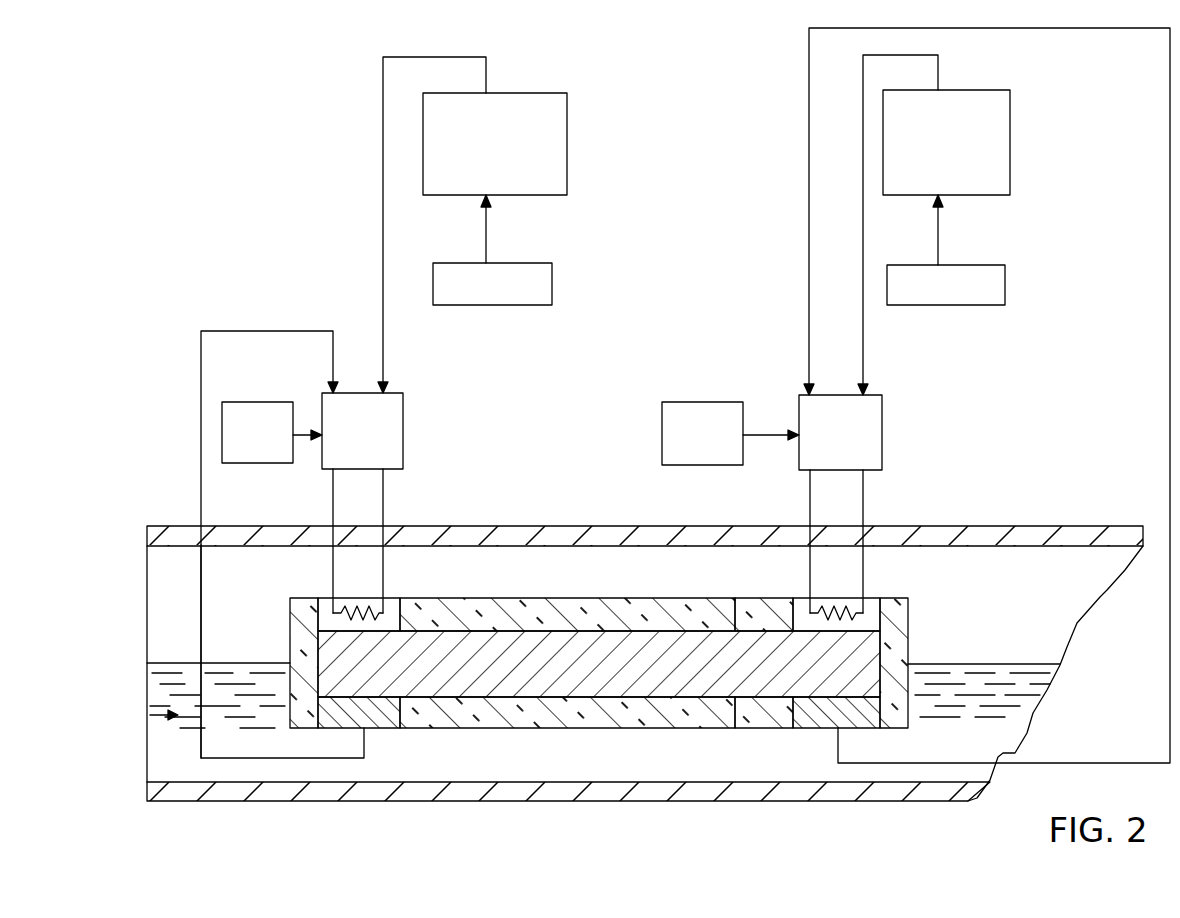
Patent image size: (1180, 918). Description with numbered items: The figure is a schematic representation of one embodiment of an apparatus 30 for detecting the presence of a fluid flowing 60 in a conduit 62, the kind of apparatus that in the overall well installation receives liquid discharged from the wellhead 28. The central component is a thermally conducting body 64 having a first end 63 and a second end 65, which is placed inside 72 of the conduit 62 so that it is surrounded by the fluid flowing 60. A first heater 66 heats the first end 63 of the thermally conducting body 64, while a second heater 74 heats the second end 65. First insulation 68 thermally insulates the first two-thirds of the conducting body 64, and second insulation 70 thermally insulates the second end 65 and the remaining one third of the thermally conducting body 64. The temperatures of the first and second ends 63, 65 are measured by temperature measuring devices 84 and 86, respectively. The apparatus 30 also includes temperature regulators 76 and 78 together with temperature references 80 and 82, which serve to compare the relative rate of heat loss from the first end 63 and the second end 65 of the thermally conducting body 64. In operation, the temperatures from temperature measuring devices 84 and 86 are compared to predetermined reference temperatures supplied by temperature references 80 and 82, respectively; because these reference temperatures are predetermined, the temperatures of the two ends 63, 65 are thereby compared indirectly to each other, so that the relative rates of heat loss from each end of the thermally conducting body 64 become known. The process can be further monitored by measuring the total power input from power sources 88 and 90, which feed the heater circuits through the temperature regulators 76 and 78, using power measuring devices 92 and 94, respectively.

The wellhead 28 is at (150, 700).
The apparatus for detecting the presence of a fluid flow 30 is at (685, 395).
The fluid flowing 60 is at (645, 673).
The conduit 62 is at (918, 793).
The first end 63 is at (274, 648).
The thermally conducting body 64 is at (599, 664).
The second end 65 is at (900, 642).
The first heater 66 is at (390, 608).
The first insulation 68 is at (698, 610).
The second insulation 70 is at (766, 600).
The inside of conduit 72 is at (1008, 572).
The second heater 74 is at (870, 620).
The temperature regulator 76 is at (383, 455).
The temperature regulator 78 is at (859, 455).
The temperature reference 80 is at (272, 462).
The temperature reference 82 is at (730, 457).
The temperature measuring device 84 is at (385, 718).
The temperature measuring device 86 is at (815, 728).
The power source 88 is at (517, 250).
The power source 90 is at (972, 250).
The power measuring device 92 is at (525, 117).
The power measuring device 94 is at (981, 119).